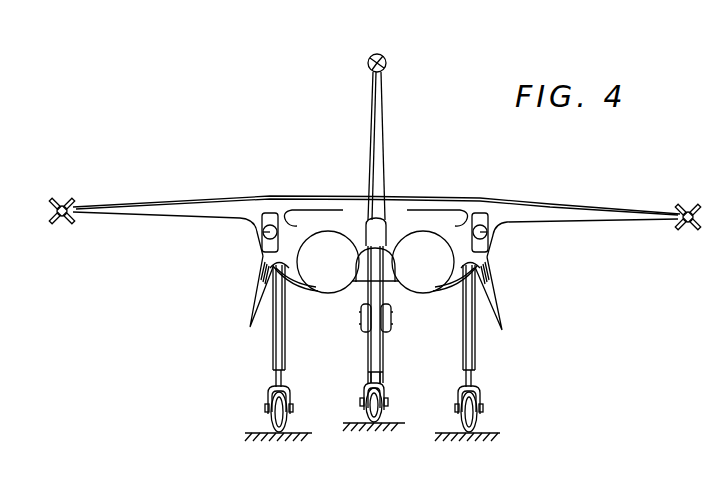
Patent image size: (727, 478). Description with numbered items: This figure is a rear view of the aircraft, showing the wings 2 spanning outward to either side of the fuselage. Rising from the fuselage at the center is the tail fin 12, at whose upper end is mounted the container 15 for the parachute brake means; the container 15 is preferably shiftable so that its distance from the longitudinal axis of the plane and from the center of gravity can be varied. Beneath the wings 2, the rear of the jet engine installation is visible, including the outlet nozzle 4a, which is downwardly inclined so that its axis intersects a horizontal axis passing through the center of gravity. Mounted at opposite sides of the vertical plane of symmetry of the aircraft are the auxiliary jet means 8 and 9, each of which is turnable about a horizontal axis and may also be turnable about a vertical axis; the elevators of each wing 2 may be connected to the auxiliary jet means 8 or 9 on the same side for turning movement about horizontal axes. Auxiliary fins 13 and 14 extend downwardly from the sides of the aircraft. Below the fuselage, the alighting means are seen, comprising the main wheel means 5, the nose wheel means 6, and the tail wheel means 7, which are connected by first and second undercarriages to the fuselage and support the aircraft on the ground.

The wing 2 is at (617, 213).
The outlet nozzle 4a is at (317, 284).
The main wheel means 5 is at (283, 410).
The nose wheel means 6 is at (378, 404).
The tail wheel means 7 is at (389, 318).
The auxiliary jet means 8 is at (496, 240).
The auxiliary jet means 9 is at (262, 238).
The tail fin 12 is at (377, 134).
The auxiliary fin 13 is at (494, 300).
The auxiliary fin 14 is at (256, 303).
The container 15 is at (385, 58).